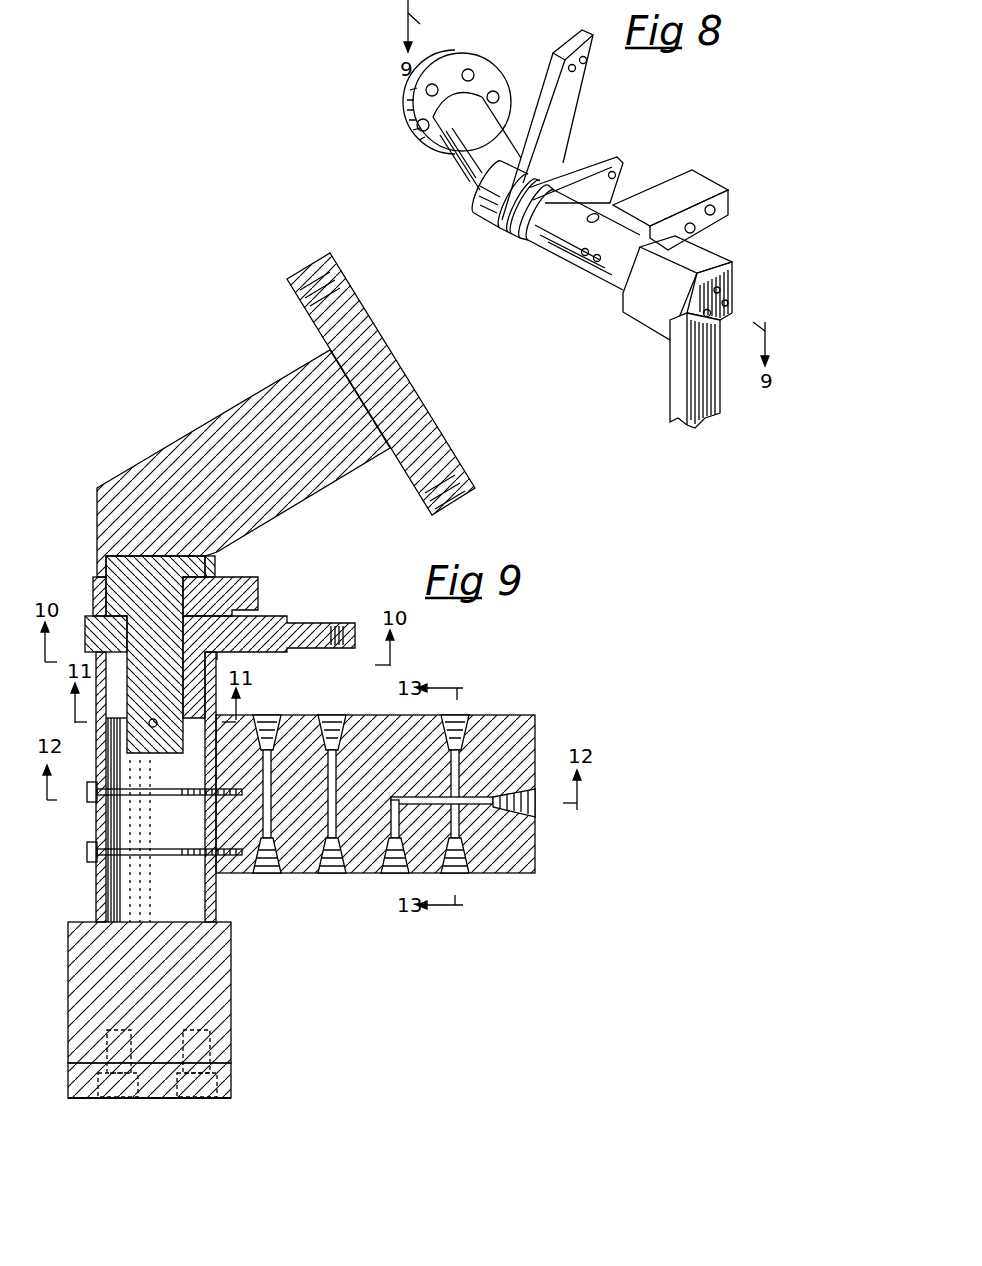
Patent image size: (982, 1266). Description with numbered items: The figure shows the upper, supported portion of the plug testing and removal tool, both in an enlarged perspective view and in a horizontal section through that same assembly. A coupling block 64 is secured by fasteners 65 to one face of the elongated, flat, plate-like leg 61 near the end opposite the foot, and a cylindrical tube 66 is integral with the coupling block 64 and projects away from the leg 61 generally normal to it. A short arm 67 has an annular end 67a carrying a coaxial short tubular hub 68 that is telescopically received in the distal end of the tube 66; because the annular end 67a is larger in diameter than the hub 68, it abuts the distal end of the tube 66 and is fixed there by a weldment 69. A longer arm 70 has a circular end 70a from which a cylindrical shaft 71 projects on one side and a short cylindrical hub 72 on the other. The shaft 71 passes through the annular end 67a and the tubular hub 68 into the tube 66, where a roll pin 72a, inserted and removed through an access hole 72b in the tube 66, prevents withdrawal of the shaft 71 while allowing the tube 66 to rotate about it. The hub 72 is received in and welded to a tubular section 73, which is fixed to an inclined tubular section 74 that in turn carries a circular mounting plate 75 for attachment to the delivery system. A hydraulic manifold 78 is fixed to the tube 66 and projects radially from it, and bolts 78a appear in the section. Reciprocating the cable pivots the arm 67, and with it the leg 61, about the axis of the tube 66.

In FIG. 8, the leg 61 is at (713, 380).
In FIG. 9, the leg 61 is at (157, 1098).
In FIG. 8, the coupling block 64 is at (642, 315).
In FIG. 9, the coupling block 64 is at (232, 960).
In FIG. 8, the fasteners 65 is at (720, 290).
In FIG. 9, the fasteners 65 is at (217, 1085).
In FIG. 8, the cylindrical tube 66 is at (558, 252).
In FIG. 9, the cylindrical tube 66 is at (98, 888).
In FIG. 8, the short arm 67 is at (578, 162).
In FIG. 9, the short arm 67 is at (283, 622).
In FIG. 8, the annular end 67a is at (526, 240).
In FIG. 9, the annular end 67a is at (85, 622).
In FIG. 9, the tubular hub 68 is at (118, 720).
In FIG. 9, the weldment 69 is at (217, 657).
In FIG. 8, the longer arm 70 is at (578, 100).
In FIG. 9, the longer arm 70 is at (258, 583).
In FIG. 8, the circular end 70a is at (507, 228).
In FIG. 9, the circular end 70a is at (93, 580).
In FIG. 9, the cylindrical shaft 71 is at (162, 770).
In FIG. 9, the hub 72 is at (210, 566).
In FIG. 9, the roll pin 72a is at (157, 727).
In FIG. 8, the access hole 72b is at (600, 215).
In FIG. 8, the tubular section 73 is at (493, 212).
In FIG. 9, the tubular section 73 is at (97, 507).
In FIG. 8, the tubular section 74 is at (458, 162).
In FIG. 9, the tubular section 74 is at (207, 423).
In FIG. 8, the circular mounting plate 75 is at (407, 100).
In FIG. 9, the circular mounting plate 75 is at (300, 273).
In FIG. 8, the hydraulic manifold 78 is at (707, 180).
In FIG. 9, the hydraulic manifold 78 is at (303, 873).
In FIG. 9, the bolts 78a is at (87, 795).